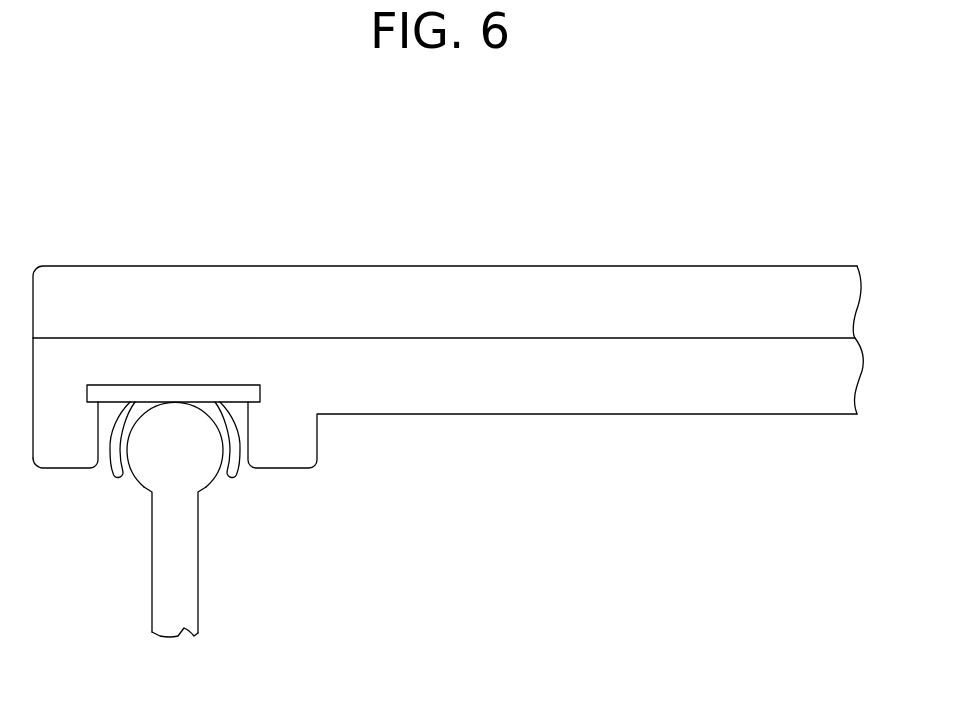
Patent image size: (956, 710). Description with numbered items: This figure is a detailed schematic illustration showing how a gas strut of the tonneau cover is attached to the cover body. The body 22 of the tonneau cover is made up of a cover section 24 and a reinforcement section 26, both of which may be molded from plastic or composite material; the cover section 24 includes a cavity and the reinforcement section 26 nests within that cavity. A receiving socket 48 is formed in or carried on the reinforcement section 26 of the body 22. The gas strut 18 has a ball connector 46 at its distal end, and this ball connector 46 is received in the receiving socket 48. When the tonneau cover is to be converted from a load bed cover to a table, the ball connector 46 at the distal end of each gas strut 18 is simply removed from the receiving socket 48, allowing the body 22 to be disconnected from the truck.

The gas strut 18 is at (167, 568).
The body 22 is at (446, 248).
The cover section 24 is at (610, 290).
The reinforcement section 26 is at (555, 387).
The ball connector 46 is at (171, 437).
The receiving socket 48 is at (232, 460).